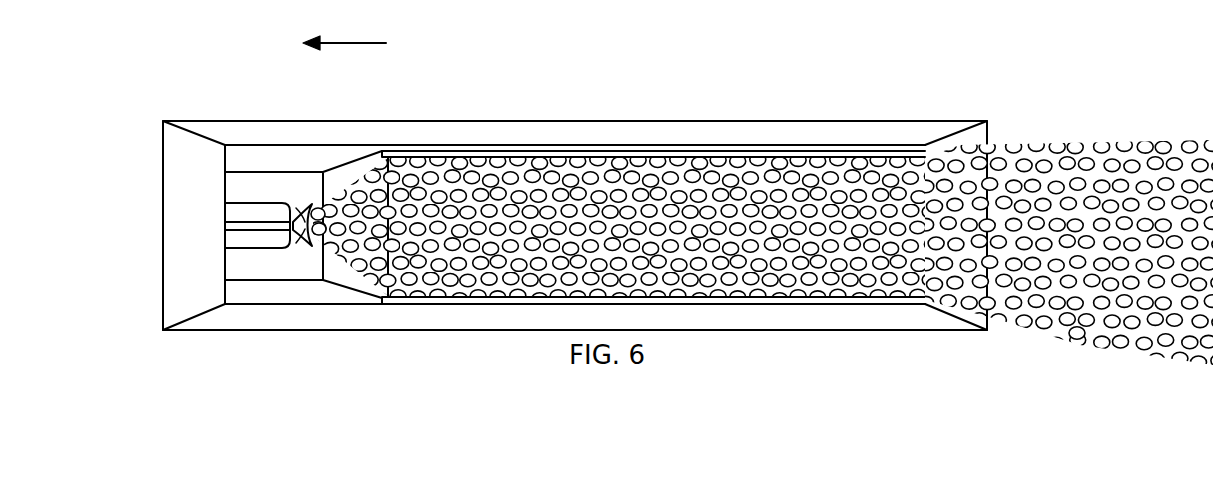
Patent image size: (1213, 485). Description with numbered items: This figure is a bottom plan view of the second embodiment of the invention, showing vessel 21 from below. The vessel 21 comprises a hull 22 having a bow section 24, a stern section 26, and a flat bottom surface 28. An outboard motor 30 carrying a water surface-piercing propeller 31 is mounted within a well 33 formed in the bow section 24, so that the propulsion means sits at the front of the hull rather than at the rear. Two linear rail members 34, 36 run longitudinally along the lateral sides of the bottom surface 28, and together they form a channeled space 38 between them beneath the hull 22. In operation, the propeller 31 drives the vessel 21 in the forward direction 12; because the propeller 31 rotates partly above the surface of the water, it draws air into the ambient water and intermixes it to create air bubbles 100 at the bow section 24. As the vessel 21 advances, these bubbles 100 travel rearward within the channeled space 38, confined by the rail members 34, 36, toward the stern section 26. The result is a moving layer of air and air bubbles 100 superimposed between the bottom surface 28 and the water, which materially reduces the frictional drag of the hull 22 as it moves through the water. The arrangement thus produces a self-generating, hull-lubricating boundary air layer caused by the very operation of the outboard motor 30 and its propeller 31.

The forward direction 12 is at (386, 43).
The vessel 21 is at (930, 118).
The hull 22 is at (437, 121).
The bow section 24 is at (232, 130).
The stern section 26 is at (910, 318).
The flat bottom surface 28 is at (914, 167).
The outboard motor 30 is at (233, 235).
The water surface-piercing propeller 31 is at (303, 246).
The well 33 is at (240, 186).
The linear rail member 34 is at (713, 151).
The linear rail member 36 is at (705, 300).
The channeled space 38 is at (517, 284).
The air bubbles 100 is at (1077, 343).